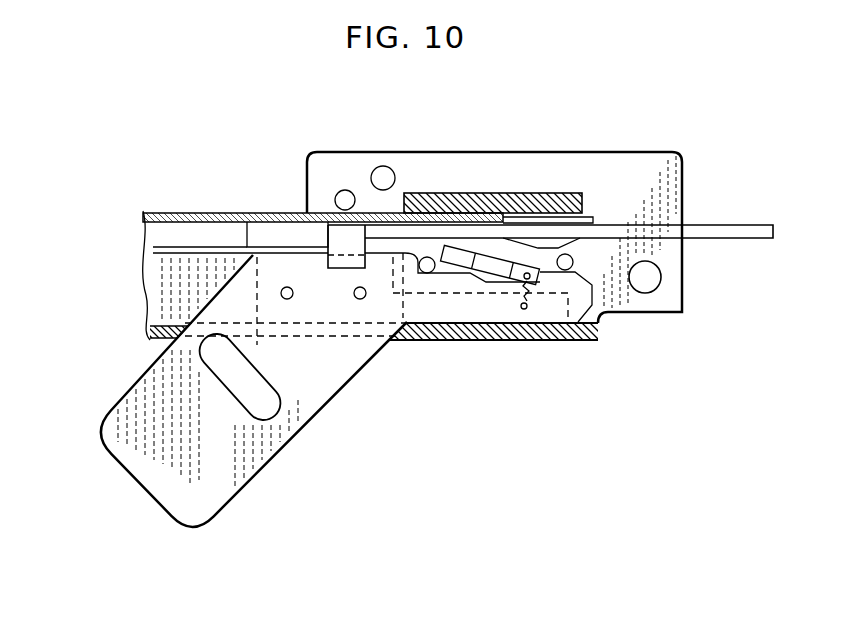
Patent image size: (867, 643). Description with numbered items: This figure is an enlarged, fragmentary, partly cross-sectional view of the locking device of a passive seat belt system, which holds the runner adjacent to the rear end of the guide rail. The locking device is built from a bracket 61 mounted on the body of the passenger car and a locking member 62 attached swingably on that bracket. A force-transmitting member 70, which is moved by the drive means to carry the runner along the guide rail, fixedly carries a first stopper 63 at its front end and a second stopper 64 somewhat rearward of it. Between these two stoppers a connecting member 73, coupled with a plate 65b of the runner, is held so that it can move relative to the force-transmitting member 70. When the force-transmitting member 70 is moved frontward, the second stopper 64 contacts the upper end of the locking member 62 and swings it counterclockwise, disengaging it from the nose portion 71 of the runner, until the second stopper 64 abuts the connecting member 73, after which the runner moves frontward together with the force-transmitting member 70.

The bracket 61 is at (525, 170).
The locking member 62 is at (496, 268).
The first stopper 63 is at (278, 228).
The second stopper 64 is at (558, 220).
The plate 65b is at (317, 307).
The force-transmitting member 70 is at (708, 228).
The nose portion 71 is at (557, 277).
The connecting member 73 is at (343, 247).